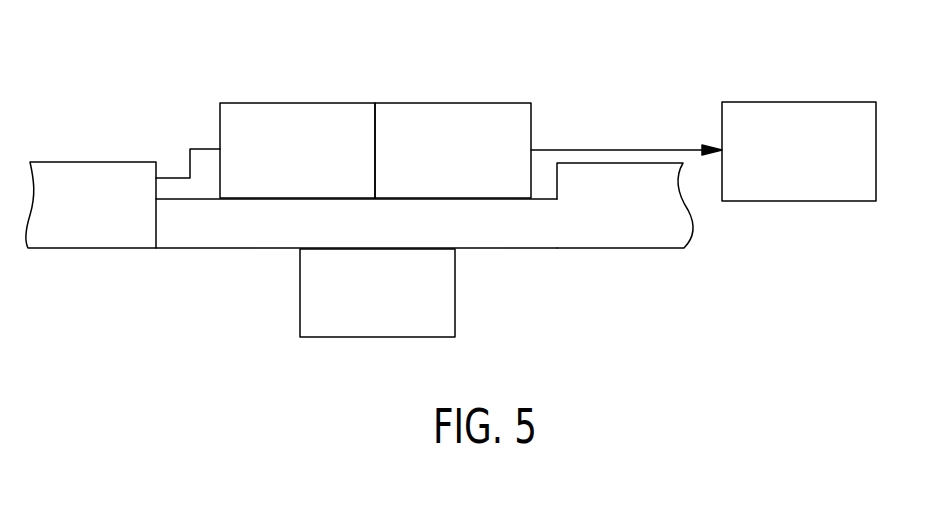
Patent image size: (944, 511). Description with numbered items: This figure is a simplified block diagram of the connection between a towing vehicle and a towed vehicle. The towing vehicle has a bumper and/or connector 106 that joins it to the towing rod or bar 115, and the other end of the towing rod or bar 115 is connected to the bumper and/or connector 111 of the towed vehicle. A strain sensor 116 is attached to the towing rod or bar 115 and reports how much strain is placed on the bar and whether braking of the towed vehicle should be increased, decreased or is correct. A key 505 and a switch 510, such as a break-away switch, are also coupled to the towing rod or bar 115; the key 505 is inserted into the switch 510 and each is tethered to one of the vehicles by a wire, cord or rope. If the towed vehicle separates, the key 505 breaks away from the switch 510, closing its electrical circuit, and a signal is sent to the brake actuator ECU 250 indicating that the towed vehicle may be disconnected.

The bumper and/or connector 106 is at (90, 250).
The bumper and/or connector 111 is at (623, 252).
The towing rod or bar 115 is at (360, 241).
The strain sensor 116 is at (455, 293).
The key 505 is at (297, 103).
The switch 510 is at (455, 103).
The brake actuator ECU 250 is at (799, 102).